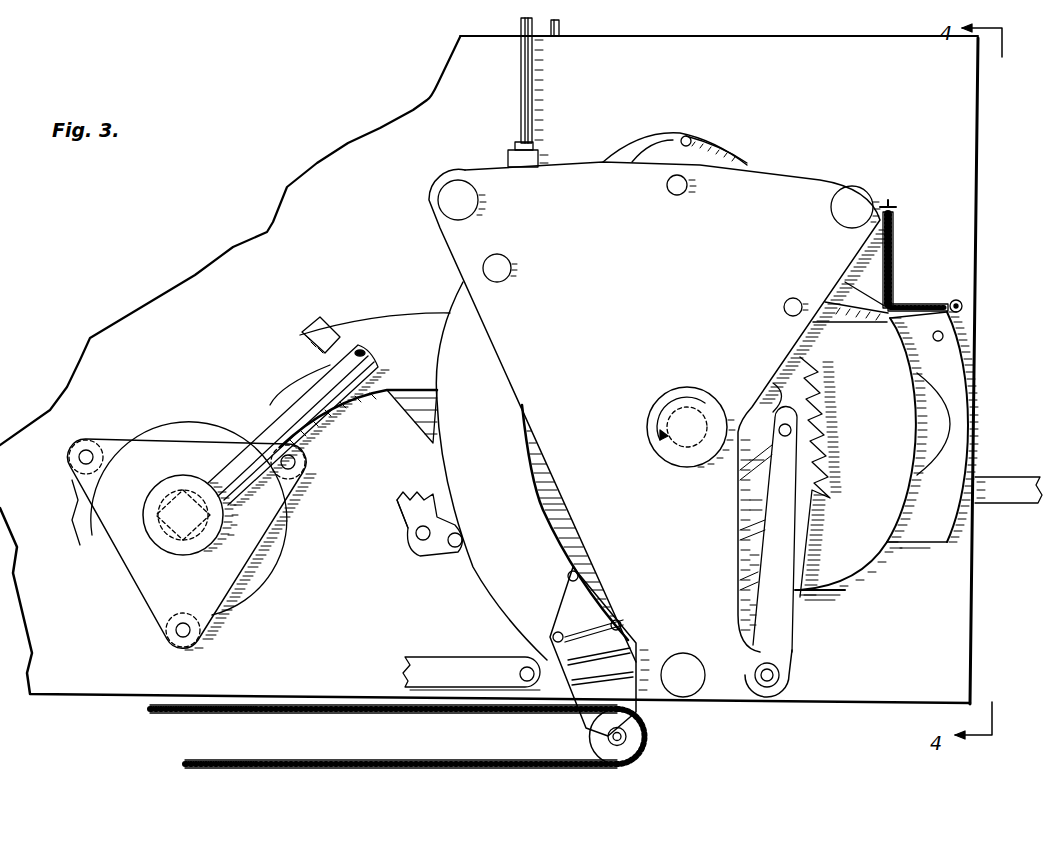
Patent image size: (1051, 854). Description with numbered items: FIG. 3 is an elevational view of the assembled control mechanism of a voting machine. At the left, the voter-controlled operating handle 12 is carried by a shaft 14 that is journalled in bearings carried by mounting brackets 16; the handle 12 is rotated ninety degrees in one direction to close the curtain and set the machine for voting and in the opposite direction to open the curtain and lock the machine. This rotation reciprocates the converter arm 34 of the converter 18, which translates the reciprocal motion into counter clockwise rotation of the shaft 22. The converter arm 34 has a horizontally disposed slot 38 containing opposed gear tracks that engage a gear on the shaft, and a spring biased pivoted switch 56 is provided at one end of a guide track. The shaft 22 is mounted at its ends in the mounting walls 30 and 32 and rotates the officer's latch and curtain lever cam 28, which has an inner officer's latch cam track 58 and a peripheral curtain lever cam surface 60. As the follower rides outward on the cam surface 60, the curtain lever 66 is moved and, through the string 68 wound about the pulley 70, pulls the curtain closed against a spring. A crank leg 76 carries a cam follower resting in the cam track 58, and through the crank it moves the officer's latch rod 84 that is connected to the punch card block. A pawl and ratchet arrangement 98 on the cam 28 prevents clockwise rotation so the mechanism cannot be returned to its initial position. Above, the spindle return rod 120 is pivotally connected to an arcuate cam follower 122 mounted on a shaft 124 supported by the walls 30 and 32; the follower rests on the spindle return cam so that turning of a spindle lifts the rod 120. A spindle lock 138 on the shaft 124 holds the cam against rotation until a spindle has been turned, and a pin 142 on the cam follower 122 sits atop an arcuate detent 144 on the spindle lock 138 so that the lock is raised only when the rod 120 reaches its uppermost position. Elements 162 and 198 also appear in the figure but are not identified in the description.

The operating handle 12 is at (317, 373).
The shaft 14 is at (158, 493).
The mounting brackets 16 is at (157, 588).
The converter 18 is at (976, 387).
The shaft 22 is at (690, 445).
The officer's latch and curtain lever cam 28 is at (862, 582).
The mounting wall 30 is at (975, 216).
The mounting wall 32 is at (798, 184).
The converter arm 34 is at (385, 340).
The slot 38 is at (940, 423).
The spring biased pivoted switch 56 is at (965, 308).
The officer's latch cam track 58 is at (772, 393).
The curtain lever cam surface 60 is at (882, 558).
The curtain lever 66 is at (520, 612).
The string 68 is at (423, 760).
The pulley 70 is at (637, 742).
The leg 76 is at (778, 560).
The officer's latch rod 84 is at (1005, 502).
The pawl and ratchet arrangement 98 is at (855, 332).
The spindle return rod 120 is at (529, 90).
The arcuate cam follower 122 is at (636, 153).
The shaft 124 is at (677, 196).
The spindle lock 138 is at (660, 154).
The pin 142 is at (691, 140).
The arcuate detent 144 is at (707, 154).
The stop pin 162 is at (560, 28).
The link 198 is at (440, 548).